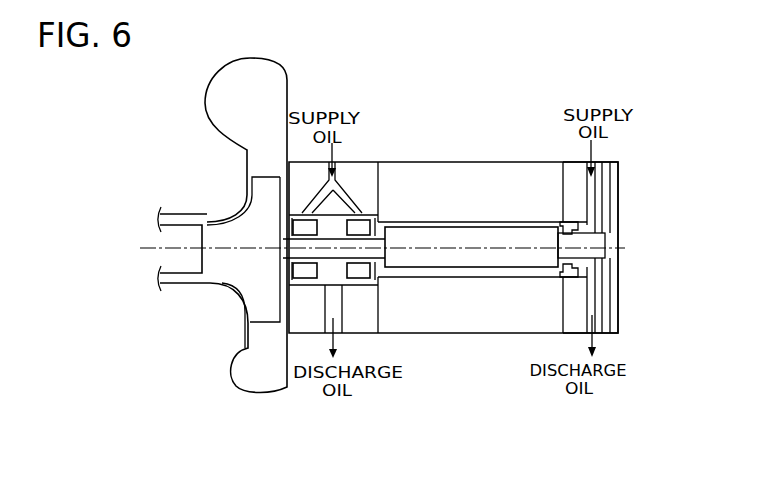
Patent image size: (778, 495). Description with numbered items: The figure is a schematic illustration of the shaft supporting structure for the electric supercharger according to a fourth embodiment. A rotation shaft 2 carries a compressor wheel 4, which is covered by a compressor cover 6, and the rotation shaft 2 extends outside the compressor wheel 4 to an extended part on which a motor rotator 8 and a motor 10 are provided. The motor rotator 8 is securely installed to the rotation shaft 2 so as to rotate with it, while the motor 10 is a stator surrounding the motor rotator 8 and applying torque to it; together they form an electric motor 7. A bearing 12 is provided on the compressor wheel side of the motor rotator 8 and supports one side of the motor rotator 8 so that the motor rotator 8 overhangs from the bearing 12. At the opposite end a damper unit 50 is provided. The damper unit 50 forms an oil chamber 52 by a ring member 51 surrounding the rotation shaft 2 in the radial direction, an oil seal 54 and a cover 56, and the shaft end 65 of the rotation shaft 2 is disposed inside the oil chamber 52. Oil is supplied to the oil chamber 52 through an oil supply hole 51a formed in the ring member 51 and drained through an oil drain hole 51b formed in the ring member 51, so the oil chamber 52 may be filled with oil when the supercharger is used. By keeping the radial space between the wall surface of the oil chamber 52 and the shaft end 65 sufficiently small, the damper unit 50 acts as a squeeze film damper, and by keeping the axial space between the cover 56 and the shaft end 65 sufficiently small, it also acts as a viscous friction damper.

The rotation shaft 2 is at (517, 262).
The compressor wheel 4 is at (263, 307).
The compressor cover 6 is at (232, 296).
The electric motor 7 is at (413, 152).
The motor rotator 8 is at (462, 262).
The motor 10 is at (463, 178).
The bearing 12 is at (365, 227).
The damper unit 50 is at (645, 220).
The ring member 51 is at (572, 170).
The supply oil passage 51a is at (592, 190).
The oil drain hole 51b is at (592, 302).
The oil chamber 52 is at (608, 258).
The oil seal 54 is at (557, 222).
The cover 56 is at (615, 197).
The shaft end portion 65 is at (607, 243).